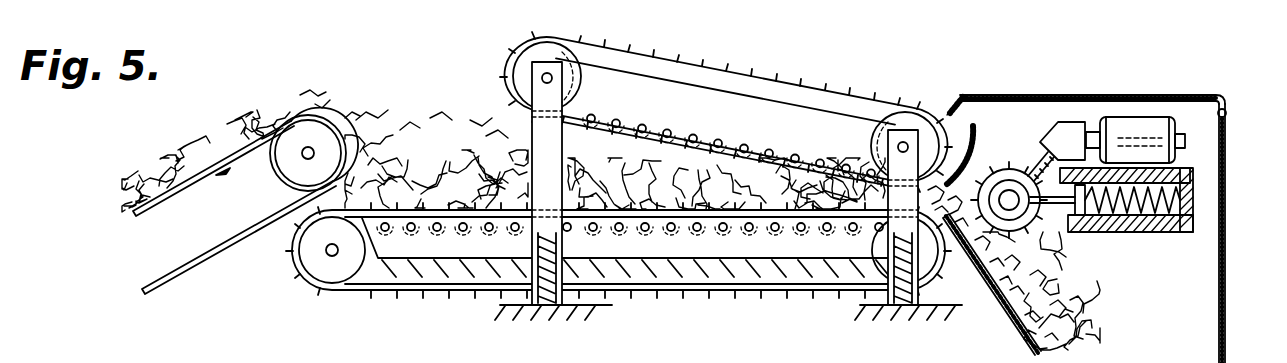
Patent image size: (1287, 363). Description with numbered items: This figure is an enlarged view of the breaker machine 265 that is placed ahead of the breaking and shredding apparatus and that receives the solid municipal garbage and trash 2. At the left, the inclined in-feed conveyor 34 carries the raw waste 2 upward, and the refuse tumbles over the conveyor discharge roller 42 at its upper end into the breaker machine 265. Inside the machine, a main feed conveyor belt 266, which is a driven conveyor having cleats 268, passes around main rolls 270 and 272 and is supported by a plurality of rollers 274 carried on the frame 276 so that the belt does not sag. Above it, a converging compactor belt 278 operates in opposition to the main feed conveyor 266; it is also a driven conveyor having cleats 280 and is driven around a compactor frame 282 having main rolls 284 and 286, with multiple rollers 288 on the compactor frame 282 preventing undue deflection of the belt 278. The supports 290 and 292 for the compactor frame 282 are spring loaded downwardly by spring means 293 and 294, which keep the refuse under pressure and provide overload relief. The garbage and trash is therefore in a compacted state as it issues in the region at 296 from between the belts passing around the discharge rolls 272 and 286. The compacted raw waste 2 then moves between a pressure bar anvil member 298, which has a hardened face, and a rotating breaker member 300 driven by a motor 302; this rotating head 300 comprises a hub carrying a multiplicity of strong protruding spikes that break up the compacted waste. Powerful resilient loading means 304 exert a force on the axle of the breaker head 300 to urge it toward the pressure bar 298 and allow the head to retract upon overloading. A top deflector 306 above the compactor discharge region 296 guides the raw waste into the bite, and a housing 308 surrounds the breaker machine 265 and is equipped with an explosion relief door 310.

The solid municipal garbage and trash 2 is at (390, 143).
The in-feed conveyor 34 is at (182, 187).
The conveyor discharge roller 42 is at (302, 127).
The breaker machine 265 is at (1040, 86).
The main feed conveyor belt 266 is at (715, 219).
The cleats 268 is at (604, 218).
The main roll 270 is at (335, 270).
The main roll 272 is at (878, 240).
The rollers 274 is at (762, 236).
The frame 276 is at (680, 248).
The converging compactor belt 278 is at (720, 147).
The cleats 280 is at (800, 166).
The compactor frame 282 is at (713, 98).
The main roll 284 is at (530, 60).
The main roll 286 is at (927, 133).
The rollers 288 is at (606, 113).
The support 290 is at (528, 133).
The support 292 is at (898, 133).
The spring means 293 is at (910, 303).
The spring means 294 is at (550, 300).
The compactor discharge region 296 is at (962, 182).
The pressure bar anvil member 298 is at (965, 245).
The rotating breaker member 300 is at (1033, 222).
The motor 302 is at (1132, 120).
The resilient loading means 304 is at (1132, 203).
The top deflector 306 is at (976, 135).
The housing 308 is at (1180, 97).
The explosion relief door 310 is at (1225, 237).